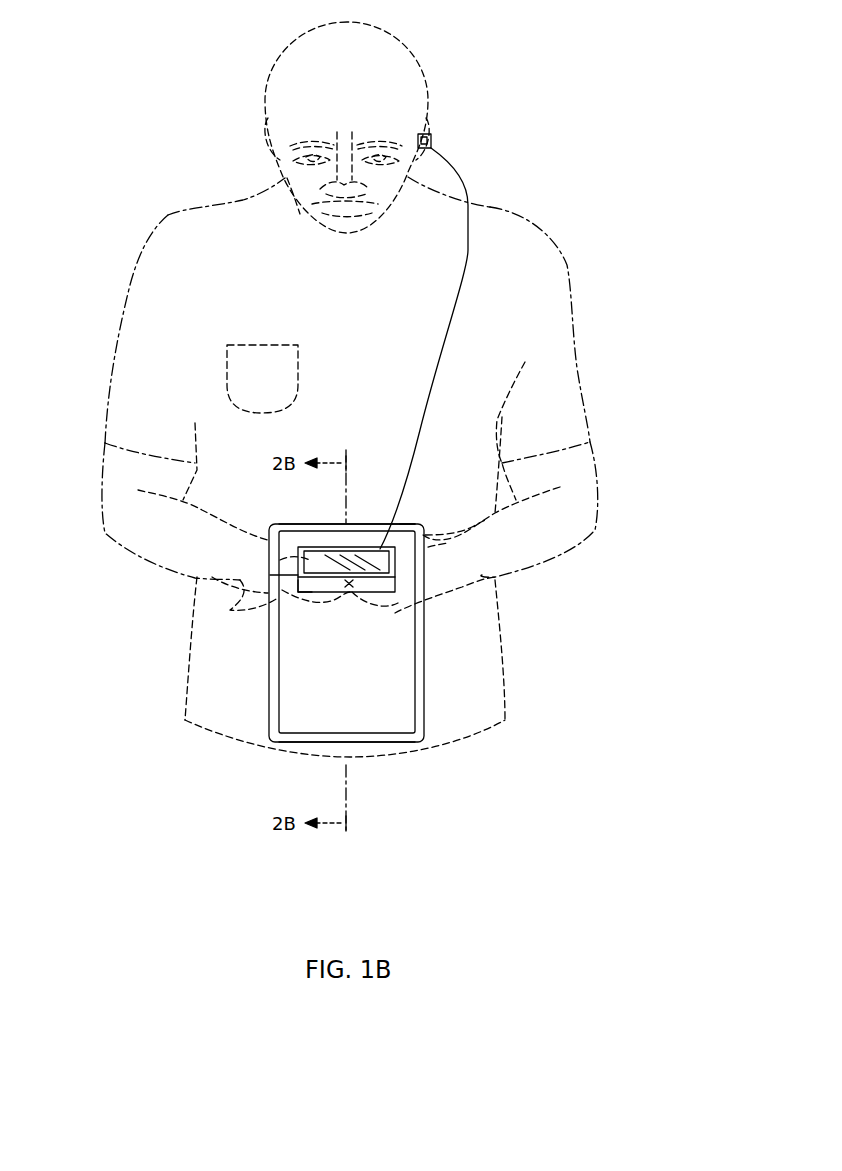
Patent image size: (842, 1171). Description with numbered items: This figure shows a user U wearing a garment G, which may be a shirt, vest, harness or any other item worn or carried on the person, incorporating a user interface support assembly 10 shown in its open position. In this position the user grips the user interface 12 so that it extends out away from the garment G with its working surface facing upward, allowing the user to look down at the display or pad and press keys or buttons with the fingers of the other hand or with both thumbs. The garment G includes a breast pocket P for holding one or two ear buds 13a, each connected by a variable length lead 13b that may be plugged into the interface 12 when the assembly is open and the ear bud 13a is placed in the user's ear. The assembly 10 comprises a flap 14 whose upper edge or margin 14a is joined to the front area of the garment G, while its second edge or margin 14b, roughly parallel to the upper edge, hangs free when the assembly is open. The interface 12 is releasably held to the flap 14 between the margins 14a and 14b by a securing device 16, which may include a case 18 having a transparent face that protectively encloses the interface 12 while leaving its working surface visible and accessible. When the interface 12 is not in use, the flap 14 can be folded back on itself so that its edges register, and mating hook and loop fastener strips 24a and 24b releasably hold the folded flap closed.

The user U is at (262, 102).
The garment G is at (168, 215).
The breast pocket P is at (227, 375).
The user interface support assembly 10 is at (258, 583).
The user interface 12 is at (344, 560).
The ear bud 13a is at (432, 138).
The variable length lead 13b is at (467, 197).
The flap 14 is at (393, 688).
The upper edge or margin 14a is at (360, 525).
The second edge or margin 14b is at (388, 743).
The securing device 16 is at (400, 578).
The case 18 is at (298, 591).
The hook and loop fastener strip 24a is at (401, 524).
The hook and loop fastener strip 24b is at (270, 575).